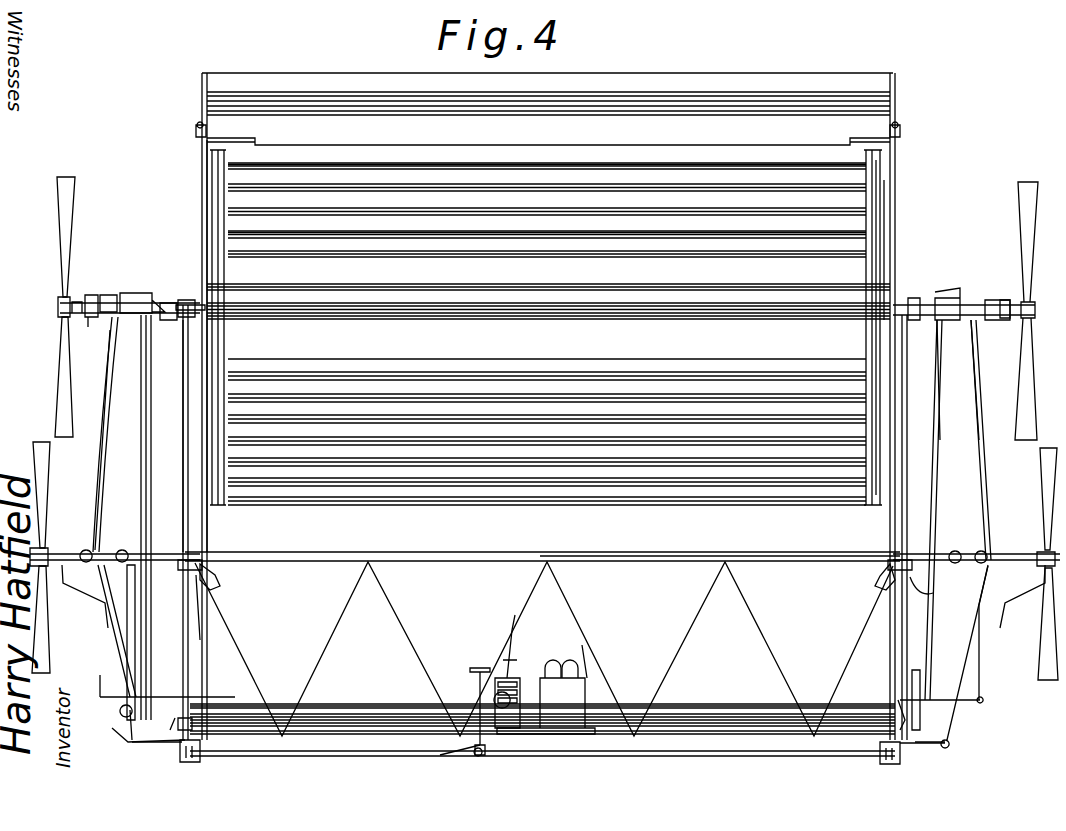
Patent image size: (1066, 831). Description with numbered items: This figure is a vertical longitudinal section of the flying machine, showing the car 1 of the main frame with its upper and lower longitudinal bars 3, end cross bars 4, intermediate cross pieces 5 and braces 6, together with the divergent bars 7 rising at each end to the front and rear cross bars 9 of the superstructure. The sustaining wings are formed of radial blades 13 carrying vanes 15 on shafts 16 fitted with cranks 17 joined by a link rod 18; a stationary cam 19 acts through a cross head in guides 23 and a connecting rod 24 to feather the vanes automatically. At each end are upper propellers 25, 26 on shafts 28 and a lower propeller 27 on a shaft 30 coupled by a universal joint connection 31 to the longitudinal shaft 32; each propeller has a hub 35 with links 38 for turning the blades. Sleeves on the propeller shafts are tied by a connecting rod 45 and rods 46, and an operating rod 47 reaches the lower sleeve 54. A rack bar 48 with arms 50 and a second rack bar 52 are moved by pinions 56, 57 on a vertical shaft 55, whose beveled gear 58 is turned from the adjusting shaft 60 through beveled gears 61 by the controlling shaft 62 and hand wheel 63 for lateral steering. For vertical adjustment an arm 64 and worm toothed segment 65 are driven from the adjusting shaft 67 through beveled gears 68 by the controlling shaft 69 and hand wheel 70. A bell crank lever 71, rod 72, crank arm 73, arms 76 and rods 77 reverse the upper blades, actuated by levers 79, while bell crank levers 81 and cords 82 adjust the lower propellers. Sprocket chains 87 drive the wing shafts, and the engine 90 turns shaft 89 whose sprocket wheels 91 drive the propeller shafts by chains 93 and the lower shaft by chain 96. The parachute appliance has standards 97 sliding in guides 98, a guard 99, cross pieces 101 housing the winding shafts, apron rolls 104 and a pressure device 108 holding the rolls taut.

The car 1 is at (360, 718).
The longitudinal bars 3 is at (356, 553).
The cross bars 4 is at (898, 752).
The intermediate cross pieces 5 is at (890, 570).
The braces 6 is at (380, 597).
The bars 7 is at (203, 590).
The cross bars 9 is at (192, 300).
The radial blades 13 is at (318, 290).
The vanes 15 is at (545, 290).
The shafts 16 is at (670, 238).
The cranks 17 is at (875, 215).
The link rod 18 is at (880, 196).
The stationary cam 19 is at (848, 359).
The guides 23 is at (112, 330).
The connecting rod 24 is at (878, 232).
The upper propeller 25 is at (1024, 236).
The upper propeller 26 is at (75, 232).
The lower propeller 27 is at (1046, 488).
The shafts 28 is at (92, 326).
The shaft 30 is at (76, 552).
The universal joint connection 31 is at (92, 552).
The longitudinal shaft 32 is at (588, 553).
The hub 35 is at (58, 304).
The links 38 is at (52, 542).
The connecting rod 45 is at (118, 285).
The rods 46 is at (98, 470).
The operating rod 47 is at (110, 648).
The rack bar 48 is at (172, 302).
The arms 50 is at (950, 298).
The rack bar 52 is at (934, 595).
The sleeve 54 is at (205, 610).
The vertical shaft 55 is at (182, 450).
The pinion 56 is at (214, 578).
The pinion 57 is at (905, 270).
The beveled gear 58 is at (185, 700).
The adjusting shaft 60 is at (338, 698).
The beveled gears 61 is at (492, 692).
The controlling shaft 62 is at (498, 672).
The hand wheel 63 is at (532, 660).
The arm 64 is at (160, 742).
The worm toothed segment 65 is at (189, 761).
The adjusting shaft 67 is at (425, 756).
The beveled gears 68 is at (484, 756).
The controlling shaft 69 is at (478, 755).
The hand wheel 70 is at (470, 669).
The bell crank lever 71 is at (900, 690).
The rod 72 is at (184, 650).
The crank arm 73 is at (151, 320).
The arms 76 is at (90, 295).
The rods 77 is at (153, 293).
The levers 79 is at (515, 618).
The bell crank levers 81 is at (100, 672).
The cords 82 is at (222, 705).
The sprocket chains 87 is at (946, 340).
The shaft 89 is at (122, 734).
The engine 90 is at (568, 660).
The sprocket wheels 91 is at (125, 712).
The chains 93 is at (142, 495).
The chain 96 is at (108, 620).
The standards 97 is at (210, 180).
The guides 98 is at (207, 530).
The guard 99 is at (380, 73).
The cross pieces 101 is at (198, 138).
The roll 104 is at (373, 136).
The pressure device 108 is at (535, 146).